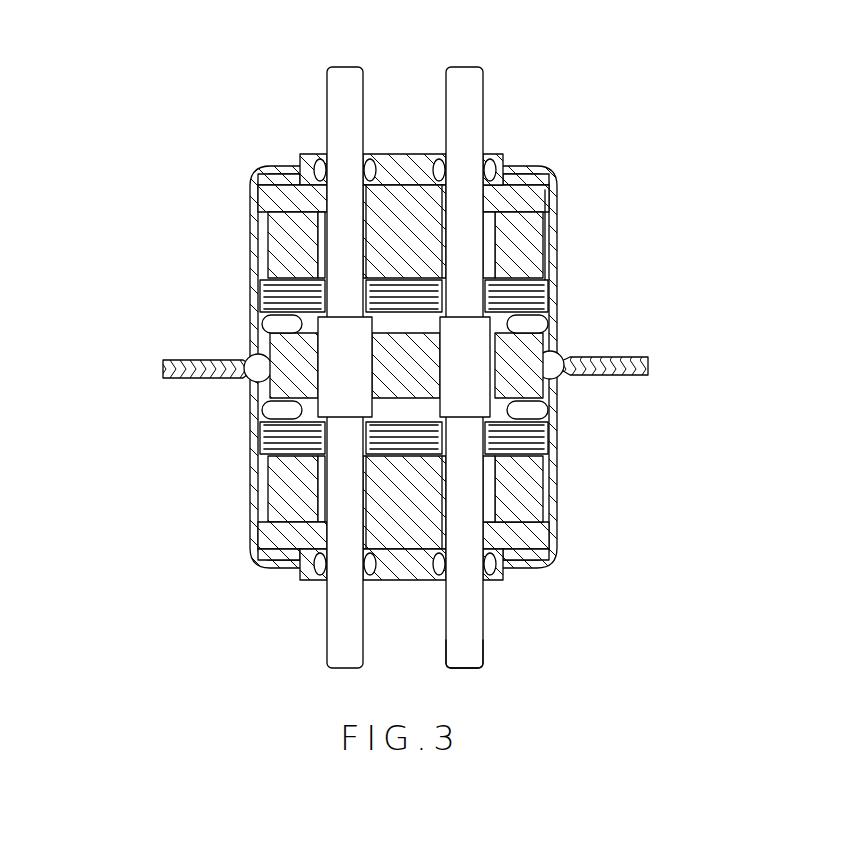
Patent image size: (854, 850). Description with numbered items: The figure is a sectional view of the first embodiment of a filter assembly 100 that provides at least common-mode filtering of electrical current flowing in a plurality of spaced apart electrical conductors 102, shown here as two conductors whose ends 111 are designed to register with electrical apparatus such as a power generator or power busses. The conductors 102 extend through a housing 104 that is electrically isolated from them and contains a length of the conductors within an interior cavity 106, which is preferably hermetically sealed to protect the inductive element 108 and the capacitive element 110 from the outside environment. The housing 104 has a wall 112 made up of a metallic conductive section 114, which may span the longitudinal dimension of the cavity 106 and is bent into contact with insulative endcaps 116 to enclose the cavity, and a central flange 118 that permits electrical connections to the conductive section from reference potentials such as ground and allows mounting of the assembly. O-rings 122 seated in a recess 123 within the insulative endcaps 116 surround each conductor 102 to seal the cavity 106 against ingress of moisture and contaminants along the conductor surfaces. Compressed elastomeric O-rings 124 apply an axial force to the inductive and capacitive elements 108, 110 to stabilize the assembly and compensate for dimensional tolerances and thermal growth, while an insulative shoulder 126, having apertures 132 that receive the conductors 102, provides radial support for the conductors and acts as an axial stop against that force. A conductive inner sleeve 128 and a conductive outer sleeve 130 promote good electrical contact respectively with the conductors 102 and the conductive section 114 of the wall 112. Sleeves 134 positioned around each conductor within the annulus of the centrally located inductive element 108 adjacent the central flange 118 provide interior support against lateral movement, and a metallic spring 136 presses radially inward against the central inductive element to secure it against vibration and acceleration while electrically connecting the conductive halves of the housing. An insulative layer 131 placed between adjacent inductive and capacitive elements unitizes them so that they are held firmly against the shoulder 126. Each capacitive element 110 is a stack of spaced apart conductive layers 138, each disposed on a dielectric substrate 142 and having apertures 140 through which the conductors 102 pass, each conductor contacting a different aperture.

The filter assembly 100 is at (575, 95).
The electrical conductors 102 is at (465, 63).
The housing 104 is at (307, 157).
The cavity 106 is at (548, 412).
The inductive element 108 is at (540, 185).
The capacitive element 110 is at (547, 332).
The ends 111 is at (482, 665).
The wall 112 is at (231, 200).
The conductive section 114 is at (265, 548).
The insulative section 116 is at (415, 150).
The central flange 118 is at (648, 374).
The O-rings 122 is at (315, 577).
The recess 123 is at (491, 575).
The compressed O-rings 124 is at (552, 455).
The shoulder 126 is at (428, 580).
The conductive inner sleeve 128 is at (548, 290).
The conductive outer sleeve 130 is at (553, 300).
The insulative layer 131 is at (530, 275).
The apertures 132 is at (553, 553).
The sleeves 134 is at (477, 403).
The metallic spring 136 is at (247, 357).
The conductive layers 138 is at (266, 272).
The apertures 140 is at (318, 455).
The dielectric substrate 142 is at (260, 300).